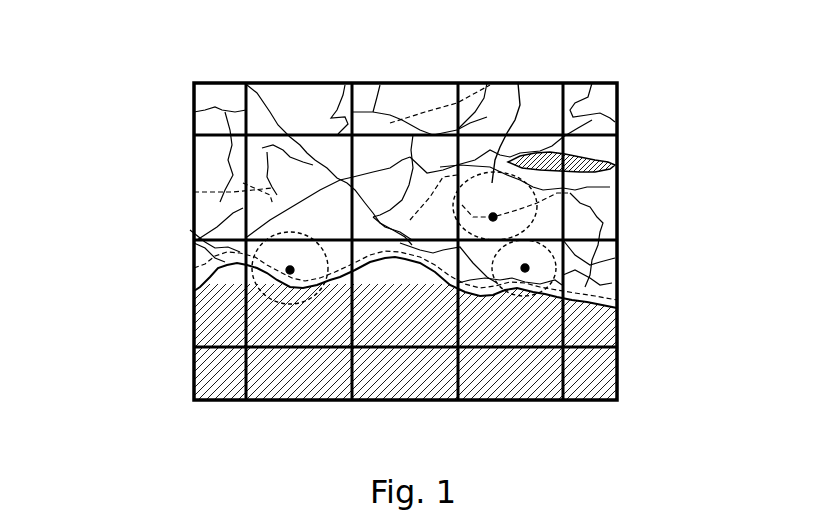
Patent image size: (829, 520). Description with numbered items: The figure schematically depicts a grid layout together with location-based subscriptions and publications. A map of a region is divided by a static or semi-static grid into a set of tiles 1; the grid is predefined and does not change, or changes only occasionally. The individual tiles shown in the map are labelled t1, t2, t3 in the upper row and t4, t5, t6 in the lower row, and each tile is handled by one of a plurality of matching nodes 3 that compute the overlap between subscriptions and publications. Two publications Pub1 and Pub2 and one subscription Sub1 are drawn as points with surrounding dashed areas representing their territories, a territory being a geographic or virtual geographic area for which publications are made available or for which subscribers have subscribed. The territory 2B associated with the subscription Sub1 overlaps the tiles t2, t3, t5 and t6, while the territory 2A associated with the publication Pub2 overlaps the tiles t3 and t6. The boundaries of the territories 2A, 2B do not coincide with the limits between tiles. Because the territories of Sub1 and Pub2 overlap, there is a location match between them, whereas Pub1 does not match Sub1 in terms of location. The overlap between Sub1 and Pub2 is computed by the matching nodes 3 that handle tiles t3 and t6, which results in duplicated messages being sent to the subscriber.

The tiles 1 is at (275, 194).
The territory of a publication 2A is at (196, 293).
The territory of a subscription 2B is at (493, 180).
The matching nodes 3 is at (138, 344).
The publication Pub1 is at (255, 264).
The publication Pub2 is at (558, 255).
The subscription Sub1 is at (535, 192).
The tile t1 is at (332, 225).
The tile t2 is at (439, 225).
The tile t3 is at (542, 225).
The tile t4 is at (332, 330).
The tile t5 is at (439, 330).
The tile t6 is at (542, 330).